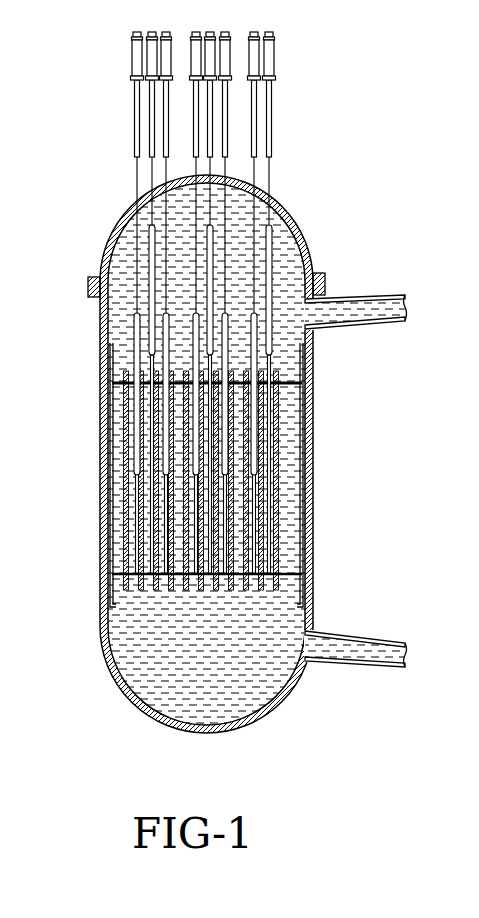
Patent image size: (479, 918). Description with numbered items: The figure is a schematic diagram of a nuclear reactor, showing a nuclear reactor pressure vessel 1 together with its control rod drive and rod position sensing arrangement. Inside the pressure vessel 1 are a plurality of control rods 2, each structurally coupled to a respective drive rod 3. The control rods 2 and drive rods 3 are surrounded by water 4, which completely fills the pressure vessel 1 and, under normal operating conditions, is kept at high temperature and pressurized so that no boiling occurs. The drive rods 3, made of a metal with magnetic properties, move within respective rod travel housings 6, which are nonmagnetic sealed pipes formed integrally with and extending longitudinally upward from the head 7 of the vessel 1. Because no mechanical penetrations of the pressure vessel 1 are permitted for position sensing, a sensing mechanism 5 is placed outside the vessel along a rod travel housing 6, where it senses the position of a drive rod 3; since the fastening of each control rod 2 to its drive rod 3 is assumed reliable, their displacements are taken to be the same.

The nuclear reactor pressure vessel 1 is at (236, 382).
The control rods 2 is at (136, 326).
The drive rods 3 is at (140, 252).
The water 4 is at (163, 657).
The sensing mechanism 5 is at (122, 53).
The rod travel housing 6 is at (134, 115).
The head 7 is at (122, 222).